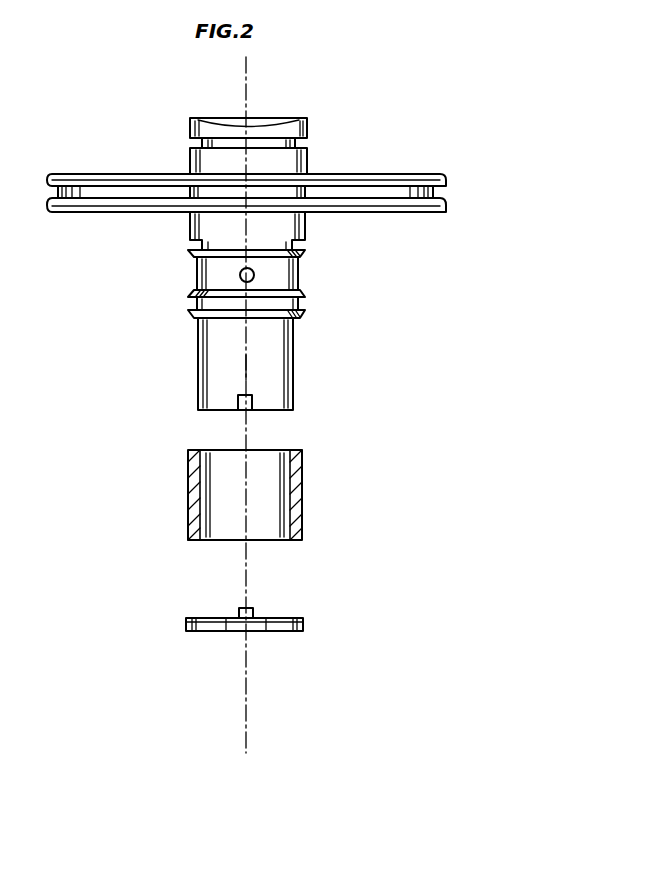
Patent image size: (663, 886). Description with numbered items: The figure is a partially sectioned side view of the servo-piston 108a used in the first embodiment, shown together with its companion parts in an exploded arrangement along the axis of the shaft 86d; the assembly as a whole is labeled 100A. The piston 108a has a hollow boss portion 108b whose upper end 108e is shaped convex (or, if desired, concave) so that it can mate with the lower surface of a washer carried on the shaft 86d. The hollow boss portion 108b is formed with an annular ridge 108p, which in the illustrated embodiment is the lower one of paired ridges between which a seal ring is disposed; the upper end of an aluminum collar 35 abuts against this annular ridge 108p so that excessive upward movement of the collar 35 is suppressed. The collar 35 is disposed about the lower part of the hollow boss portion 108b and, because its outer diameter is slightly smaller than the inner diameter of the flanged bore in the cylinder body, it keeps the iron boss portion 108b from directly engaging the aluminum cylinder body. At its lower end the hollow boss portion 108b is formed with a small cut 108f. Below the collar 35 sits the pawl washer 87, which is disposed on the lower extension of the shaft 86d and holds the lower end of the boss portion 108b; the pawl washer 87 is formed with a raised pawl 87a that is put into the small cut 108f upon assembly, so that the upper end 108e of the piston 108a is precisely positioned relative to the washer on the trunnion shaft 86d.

The shaft 86d is at (244, 74).
The spool assembly 100A is at (570, 88).
The upper end of the hollow boss portion 108e is at (263, 120).
The servo-piston 108a is at (375, 215).
The hollow boss portion 108b is at (307, 228).
The annular ridge 108p is at (300, 317).
The small cut 108f is at (248, 400).
The aluminum collar 35 is at (302, 485).
The pawl washer 87 is at (251, 597).
The pawl 87a is at (242, 608).